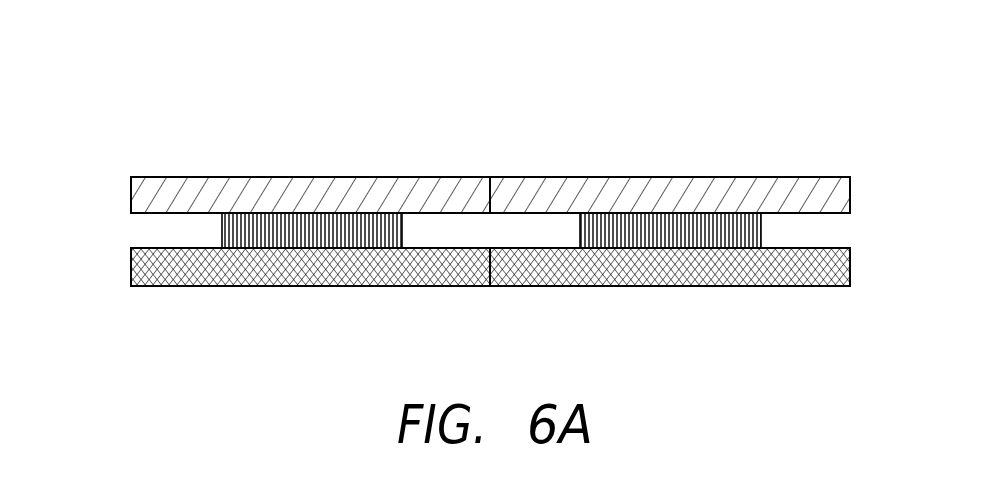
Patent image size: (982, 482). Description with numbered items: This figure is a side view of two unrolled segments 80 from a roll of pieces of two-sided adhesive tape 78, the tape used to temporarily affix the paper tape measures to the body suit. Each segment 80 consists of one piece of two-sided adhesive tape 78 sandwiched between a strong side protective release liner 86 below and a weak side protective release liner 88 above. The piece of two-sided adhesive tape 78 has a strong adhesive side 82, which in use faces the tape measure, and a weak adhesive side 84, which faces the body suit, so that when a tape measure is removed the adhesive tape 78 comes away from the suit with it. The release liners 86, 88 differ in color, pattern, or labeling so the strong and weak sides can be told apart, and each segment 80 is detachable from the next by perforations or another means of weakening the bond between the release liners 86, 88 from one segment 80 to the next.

The two-sided adhesive tape 78 is at (222, 239).
The segment 80 is at (356, 105).
The strong adhesive side 82 is at (290, 248).
The weak adhesive side 84 is at (297, 213).
The strong side protective release liner 86 is at (363, 273).
The weak side protective release liner 88 is at (207, 191).